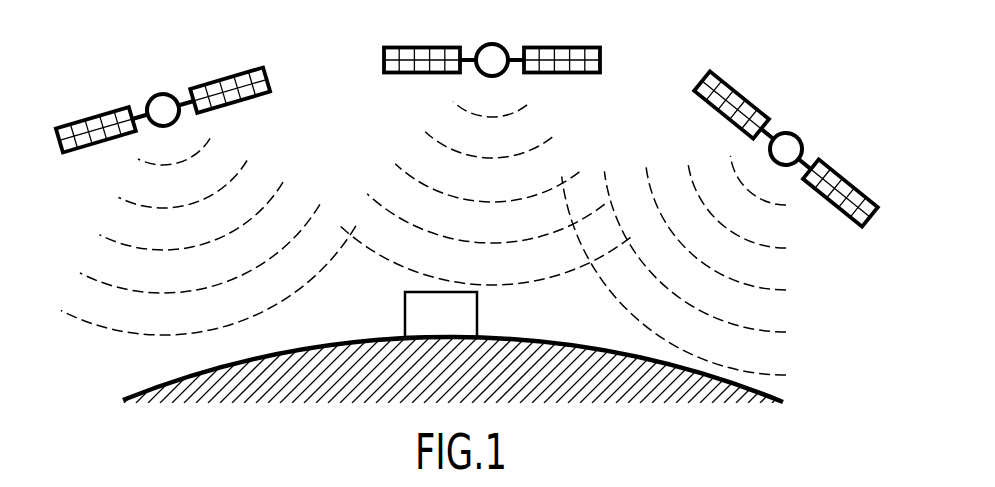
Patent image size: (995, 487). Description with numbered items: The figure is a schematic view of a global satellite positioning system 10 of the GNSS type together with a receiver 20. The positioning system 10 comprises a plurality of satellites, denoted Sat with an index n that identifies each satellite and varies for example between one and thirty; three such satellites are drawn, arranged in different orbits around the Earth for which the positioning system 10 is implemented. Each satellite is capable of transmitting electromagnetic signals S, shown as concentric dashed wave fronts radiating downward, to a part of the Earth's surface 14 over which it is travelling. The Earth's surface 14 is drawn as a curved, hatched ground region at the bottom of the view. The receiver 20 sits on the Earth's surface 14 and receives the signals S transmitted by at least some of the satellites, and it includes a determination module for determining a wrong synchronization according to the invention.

The global satellite positioning system 10 is at (94, 185).
The Earth's surface 14 is at (161, 385).
The receiver 20 is at (441, 314).